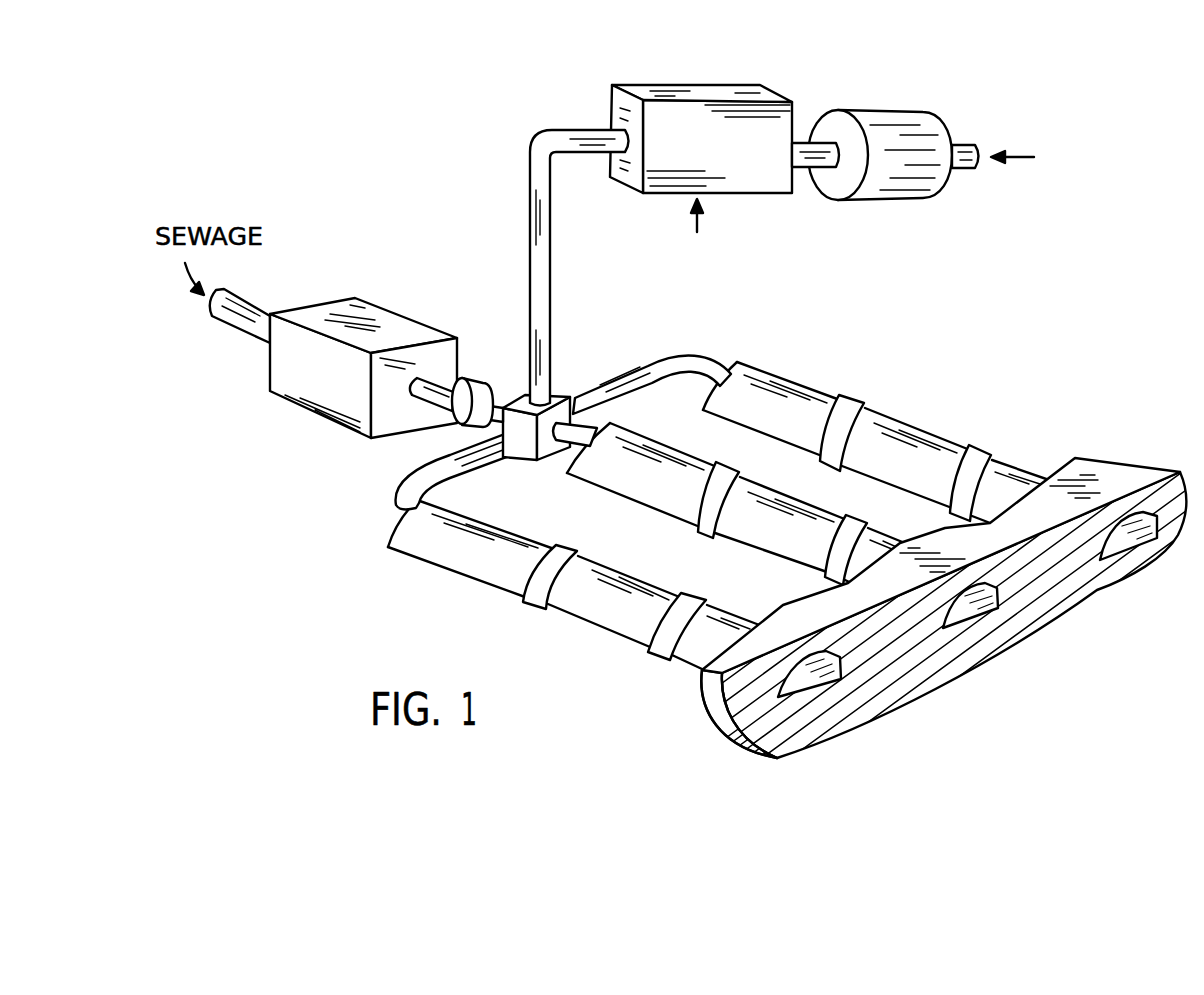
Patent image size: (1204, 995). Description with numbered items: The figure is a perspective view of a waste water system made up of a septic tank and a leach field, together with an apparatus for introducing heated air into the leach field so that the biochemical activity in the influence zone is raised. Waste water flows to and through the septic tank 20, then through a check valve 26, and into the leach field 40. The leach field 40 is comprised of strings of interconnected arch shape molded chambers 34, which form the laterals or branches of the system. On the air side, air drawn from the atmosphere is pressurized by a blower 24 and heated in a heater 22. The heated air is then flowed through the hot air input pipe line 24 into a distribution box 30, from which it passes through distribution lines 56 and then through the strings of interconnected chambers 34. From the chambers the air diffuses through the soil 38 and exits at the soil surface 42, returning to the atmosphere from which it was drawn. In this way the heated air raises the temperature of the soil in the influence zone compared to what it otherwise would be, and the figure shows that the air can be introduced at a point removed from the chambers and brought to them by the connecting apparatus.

The septic tank 20 is at (393, 312).
The heater 22 is at (697, 85).
The blower and hot air input pipe line 24 is at (902, 111).
The check valve 26 is at (470, 377).
The distribution box 30 is at (563, 393).
The arch shape molded chambers 34 is at (865, 402).
The soil 38 is at (883, 614).
The leach field 40 is at (720, 504).
The soil surface 42 is at (1100, 473).
The distribution lines 56 is at (670, 372).